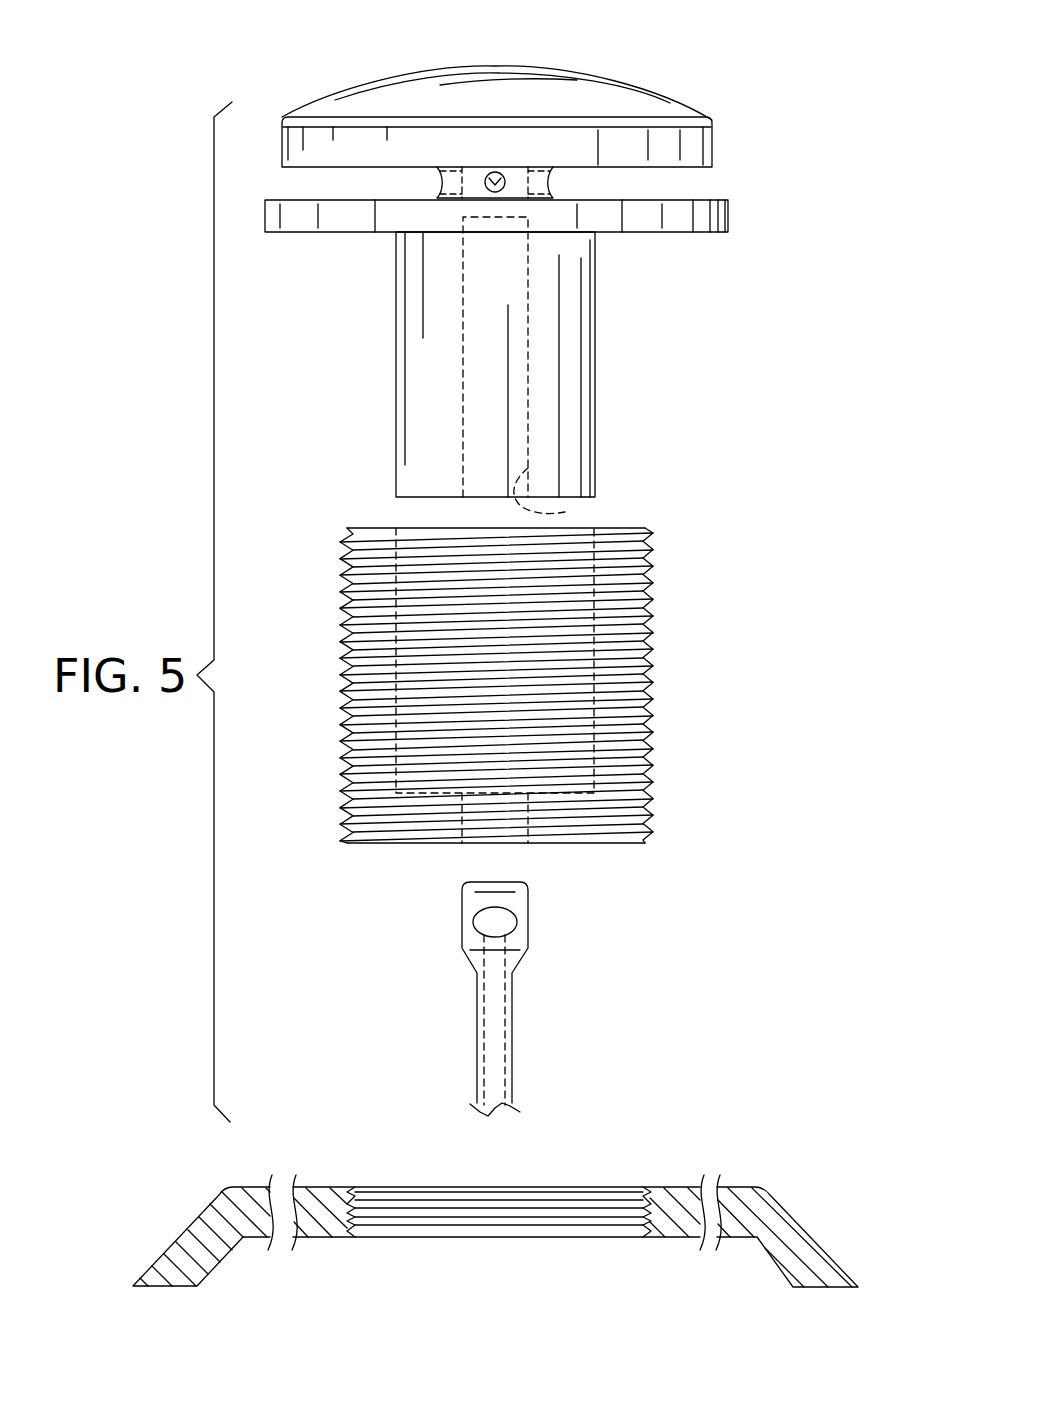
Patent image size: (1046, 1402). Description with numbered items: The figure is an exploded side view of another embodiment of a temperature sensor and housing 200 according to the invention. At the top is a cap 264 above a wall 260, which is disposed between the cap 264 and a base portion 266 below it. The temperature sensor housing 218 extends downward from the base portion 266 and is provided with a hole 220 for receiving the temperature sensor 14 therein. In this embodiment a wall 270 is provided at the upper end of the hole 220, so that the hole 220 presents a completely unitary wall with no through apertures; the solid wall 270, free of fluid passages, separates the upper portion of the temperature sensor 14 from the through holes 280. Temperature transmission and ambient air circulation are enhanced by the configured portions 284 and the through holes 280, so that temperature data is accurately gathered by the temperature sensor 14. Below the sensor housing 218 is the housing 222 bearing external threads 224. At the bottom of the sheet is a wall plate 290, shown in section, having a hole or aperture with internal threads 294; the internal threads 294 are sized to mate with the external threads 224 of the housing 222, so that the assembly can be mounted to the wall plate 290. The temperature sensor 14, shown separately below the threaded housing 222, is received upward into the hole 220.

The temperature sensor and housing 200 is at (637, 417).
The wall 260 is at (437, 182).
The cap 264 is at (382, 103).
The base portion 266 is at (294, 203).
The wall 270 is at (485, 232).
The through holes 280 is at (500, 174).
The configured portions 284 is at (553, 188).
The temperature sensor housing 218 is at (598, 340).
The hole 220 is at (565, 512).
The housing 222 is at (655, 645).
The external threads 224 is at (657, 723).
The temperature sensor 14 is at (532, 922).
The wall plate 290 is at (255, 1190).
The internal threads 294 is at (365, 1220).